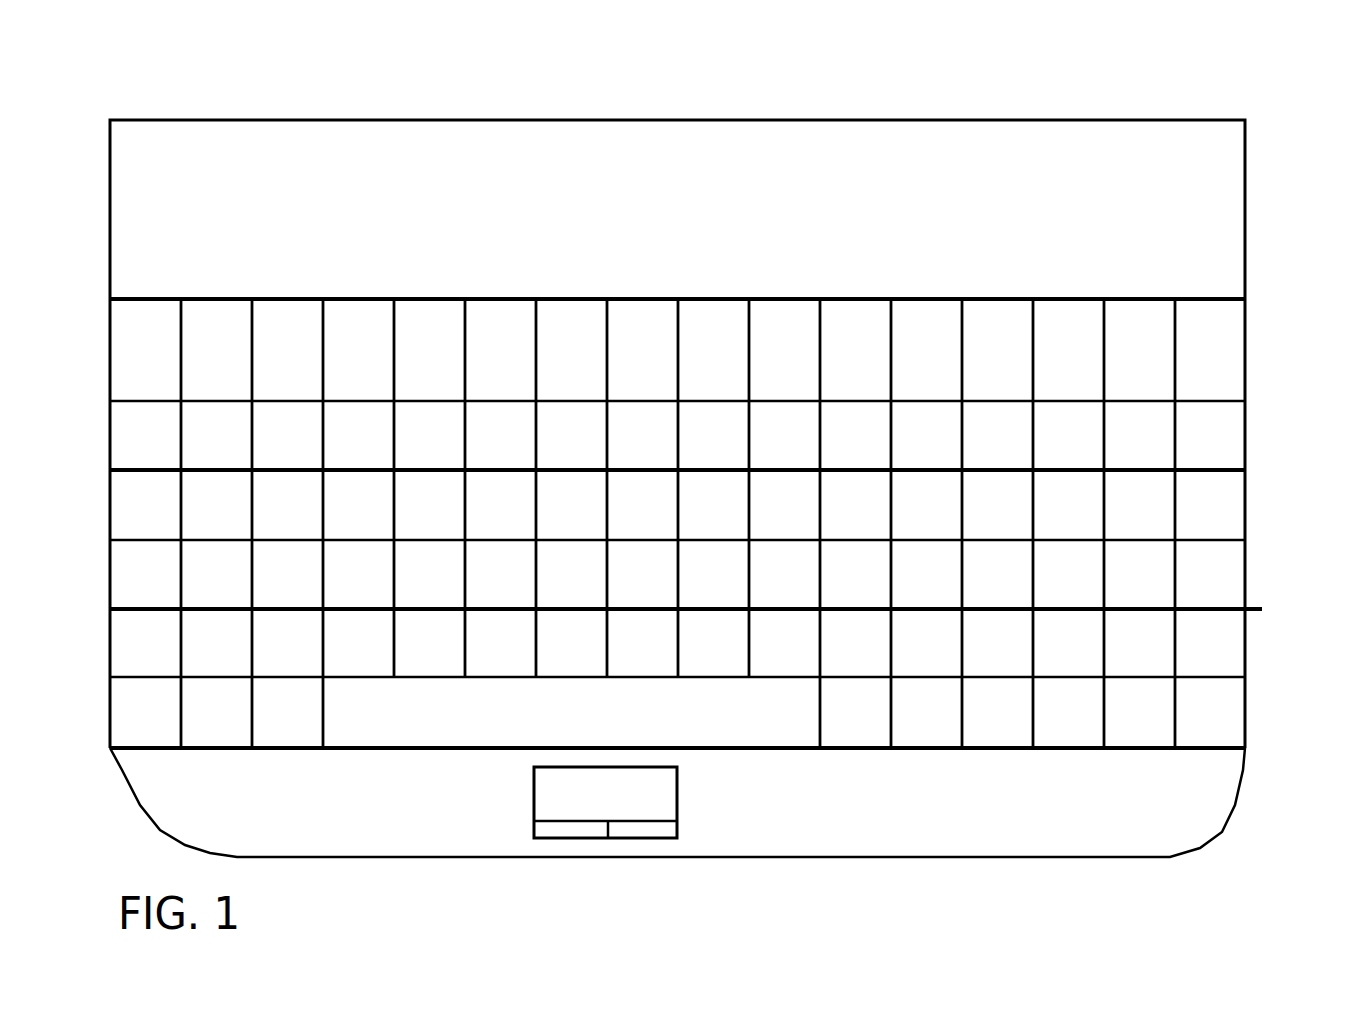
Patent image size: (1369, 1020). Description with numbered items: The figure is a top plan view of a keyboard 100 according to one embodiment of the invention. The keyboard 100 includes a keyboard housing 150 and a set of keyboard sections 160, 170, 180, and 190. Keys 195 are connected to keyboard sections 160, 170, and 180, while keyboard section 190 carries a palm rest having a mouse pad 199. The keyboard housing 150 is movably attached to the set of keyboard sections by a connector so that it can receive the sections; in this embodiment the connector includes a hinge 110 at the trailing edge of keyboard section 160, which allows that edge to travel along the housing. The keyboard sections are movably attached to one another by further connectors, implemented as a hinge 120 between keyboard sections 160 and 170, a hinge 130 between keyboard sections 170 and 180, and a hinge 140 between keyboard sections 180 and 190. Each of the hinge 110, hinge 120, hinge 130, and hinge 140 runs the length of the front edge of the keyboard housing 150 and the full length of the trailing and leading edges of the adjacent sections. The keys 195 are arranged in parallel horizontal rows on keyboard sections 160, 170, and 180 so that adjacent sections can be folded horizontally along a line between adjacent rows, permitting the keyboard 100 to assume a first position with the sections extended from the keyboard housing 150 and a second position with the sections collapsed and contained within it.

The keyboard 100 is at (1243, 103).
The hinge 110 is at (1245, 299).
The hinge 120 is at (1245, 470).
The hinge 130 is at (1262, 608).
The hinge 140 is at (1245, 748).
The keyboard housing 150 is at (1207, 190).
The keyboard section 160 is at (1262, 400).
The keyboard section 170 is at (1262, 538).
The keyboard section 180 is at (1262, 677).
The keyboard section 190 is at (1157, 828).
The keys 195 is at (996, 647).
The mouse pad 199 is at (587, 803).